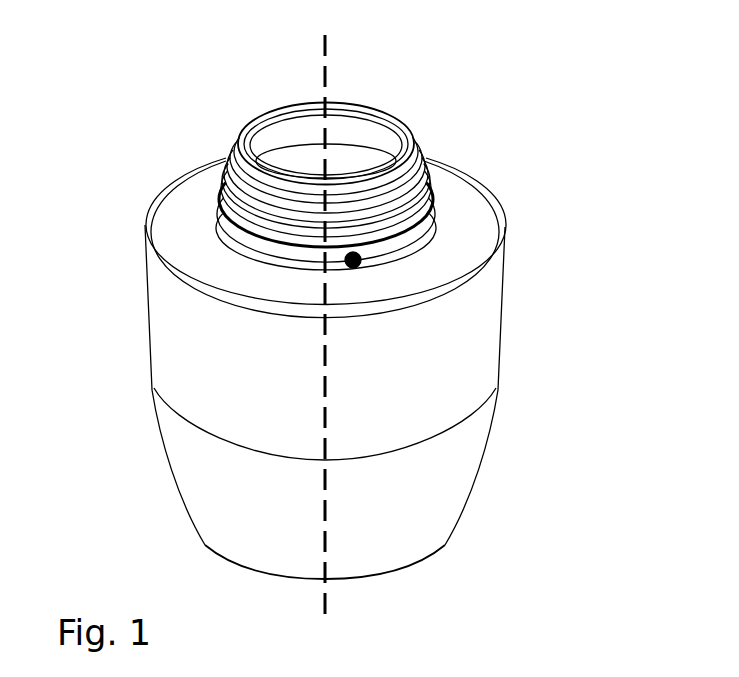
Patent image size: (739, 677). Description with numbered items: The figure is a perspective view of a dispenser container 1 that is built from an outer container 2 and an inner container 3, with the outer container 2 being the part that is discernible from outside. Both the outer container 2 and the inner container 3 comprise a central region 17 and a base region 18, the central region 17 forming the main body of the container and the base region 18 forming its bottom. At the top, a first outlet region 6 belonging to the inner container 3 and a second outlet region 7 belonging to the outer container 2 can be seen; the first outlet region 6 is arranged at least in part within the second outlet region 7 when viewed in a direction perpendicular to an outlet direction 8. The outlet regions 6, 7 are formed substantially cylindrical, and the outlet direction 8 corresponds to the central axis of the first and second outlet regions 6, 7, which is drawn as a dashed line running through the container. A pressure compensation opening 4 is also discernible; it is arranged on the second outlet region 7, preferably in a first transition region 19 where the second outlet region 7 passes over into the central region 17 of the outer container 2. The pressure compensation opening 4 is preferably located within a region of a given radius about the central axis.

The dispenser container 1 is at (220, 63).
The outer container 2 is at (473, 208).
The inner container 3 is at (358, 130).
The pressure compensation opening 4 is at (458, 274).
The first outlet region 6 is at (326, 144).
The second outlet region 7 is at (430, 220).
The outlet direction 8 is at (327, 50).
The central region 17 is at (539, 382).
The base region 18 is at (480, 587).
The first transition region 19 is at (428, 240).